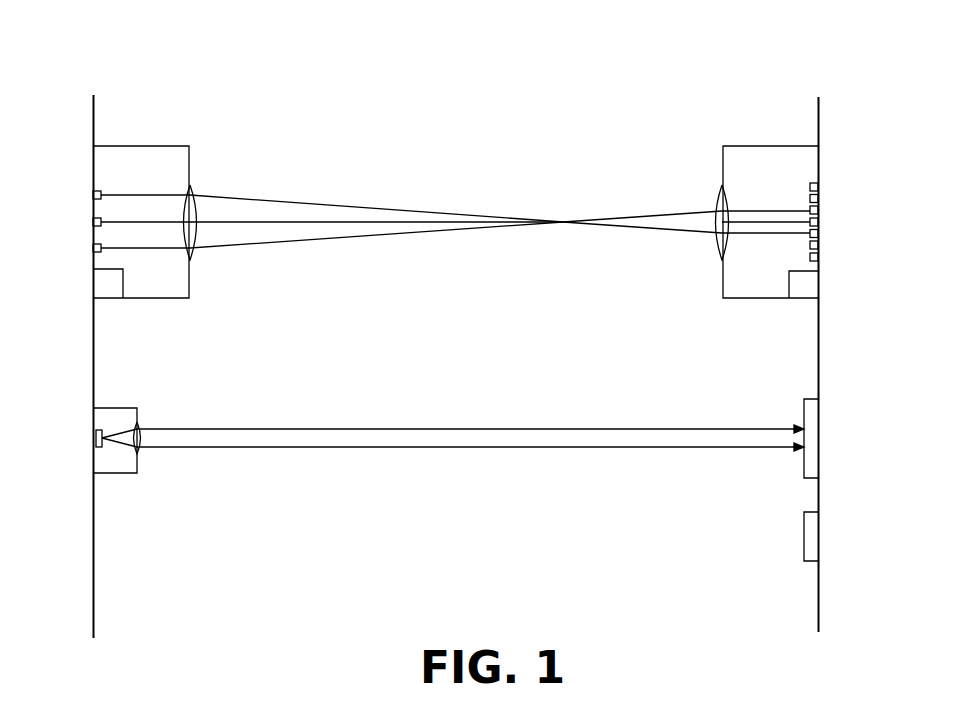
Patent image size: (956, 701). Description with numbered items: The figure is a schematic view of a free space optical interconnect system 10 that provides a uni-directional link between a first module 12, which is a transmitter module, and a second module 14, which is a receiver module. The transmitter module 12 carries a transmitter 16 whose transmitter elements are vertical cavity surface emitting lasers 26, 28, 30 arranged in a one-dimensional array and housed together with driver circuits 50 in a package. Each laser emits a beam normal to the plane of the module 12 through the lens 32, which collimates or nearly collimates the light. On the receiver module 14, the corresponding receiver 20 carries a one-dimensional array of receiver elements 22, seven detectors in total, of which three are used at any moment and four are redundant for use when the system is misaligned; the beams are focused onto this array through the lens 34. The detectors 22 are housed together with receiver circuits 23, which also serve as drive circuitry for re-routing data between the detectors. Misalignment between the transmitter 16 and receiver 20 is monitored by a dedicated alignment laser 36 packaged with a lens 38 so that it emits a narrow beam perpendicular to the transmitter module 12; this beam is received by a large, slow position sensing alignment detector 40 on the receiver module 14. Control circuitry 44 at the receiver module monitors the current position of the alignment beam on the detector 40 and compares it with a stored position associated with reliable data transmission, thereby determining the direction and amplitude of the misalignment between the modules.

The free space optical interconnect system 10 is at (556, 54).
The first module 12 is at (93, 113).
The second module 14 is at (818, 113).
The transmitter 16 is at (130, 146).
The receiver 20 is at (785, 146).
The receiver elements 22 is at (820, 188).
The receiver circuits 23 is at (807, 287).
The laser 26 is at (90, 193).
The laser 28 is at (90, 220).
The laser 30 is at (90, 247).
The lens 32 is at (192, 208).
The lens 34 is at (712, 198).
The alignment laser 36 is at (113, 407).
The lens 38 is at (138, 448).
The alignment detector 40 is at (813, 438).
The control circuitry 44 is at (813, 542).
The driver circuits 50 is at (102, 287).